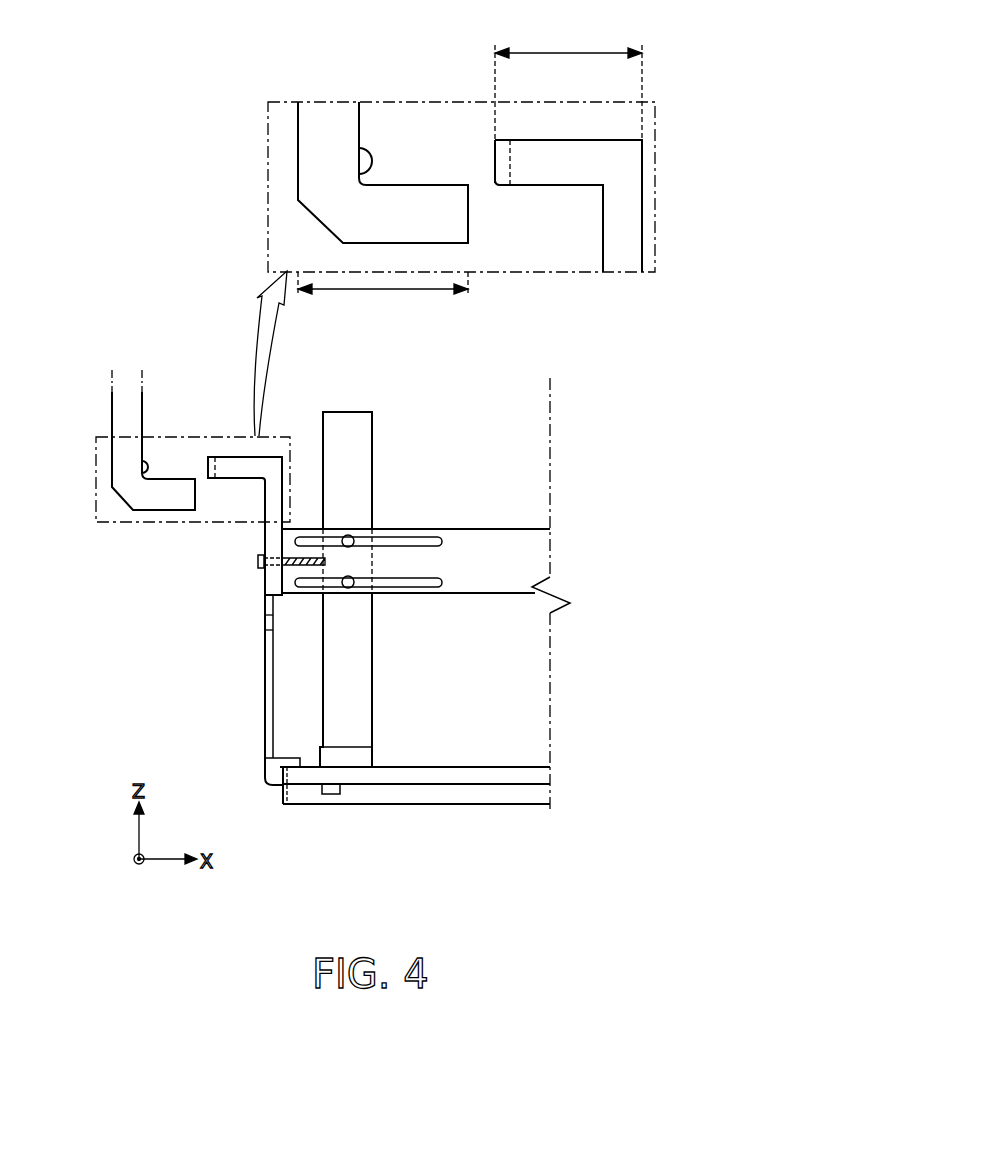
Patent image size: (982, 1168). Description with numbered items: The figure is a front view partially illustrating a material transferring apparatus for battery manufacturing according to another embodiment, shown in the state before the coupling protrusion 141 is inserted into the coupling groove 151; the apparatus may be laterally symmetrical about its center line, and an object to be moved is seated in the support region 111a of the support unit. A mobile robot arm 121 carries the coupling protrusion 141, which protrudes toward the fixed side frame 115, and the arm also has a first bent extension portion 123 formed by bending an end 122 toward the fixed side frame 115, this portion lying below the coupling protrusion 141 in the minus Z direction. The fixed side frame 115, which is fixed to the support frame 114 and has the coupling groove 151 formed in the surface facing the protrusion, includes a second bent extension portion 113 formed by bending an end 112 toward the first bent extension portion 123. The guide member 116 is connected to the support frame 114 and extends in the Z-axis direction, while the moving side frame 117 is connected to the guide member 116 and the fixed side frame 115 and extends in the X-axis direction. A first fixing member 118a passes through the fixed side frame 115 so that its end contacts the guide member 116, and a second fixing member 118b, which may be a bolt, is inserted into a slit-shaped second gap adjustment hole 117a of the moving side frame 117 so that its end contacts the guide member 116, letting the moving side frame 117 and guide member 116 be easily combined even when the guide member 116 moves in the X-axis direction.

The support region 111a is at (438, 686).
The end 112 is at (493, 150).
The second bent extension portion 113 is at (568, 84).
The support frame 114 is at (538, 775).
The fixed side frame 115 is at (630, 213).
The guide member 116 is at (340, 670).
The moving side frame 117 is at (518, 555).
The second gap adjustment hole 117a is at (430, 580).
The first fixing member 118a is at (258, 562).
The second fixing member 118b is at (350, 576).
The mobile robot arm 121 is at (317, 145).
The end 122 is at (468, 218).
The first bent extension portion 123 is at (383, 293).
The coupling protrusion 141 is at (368, 157).
The coupling groove 151 is at (500, 173).